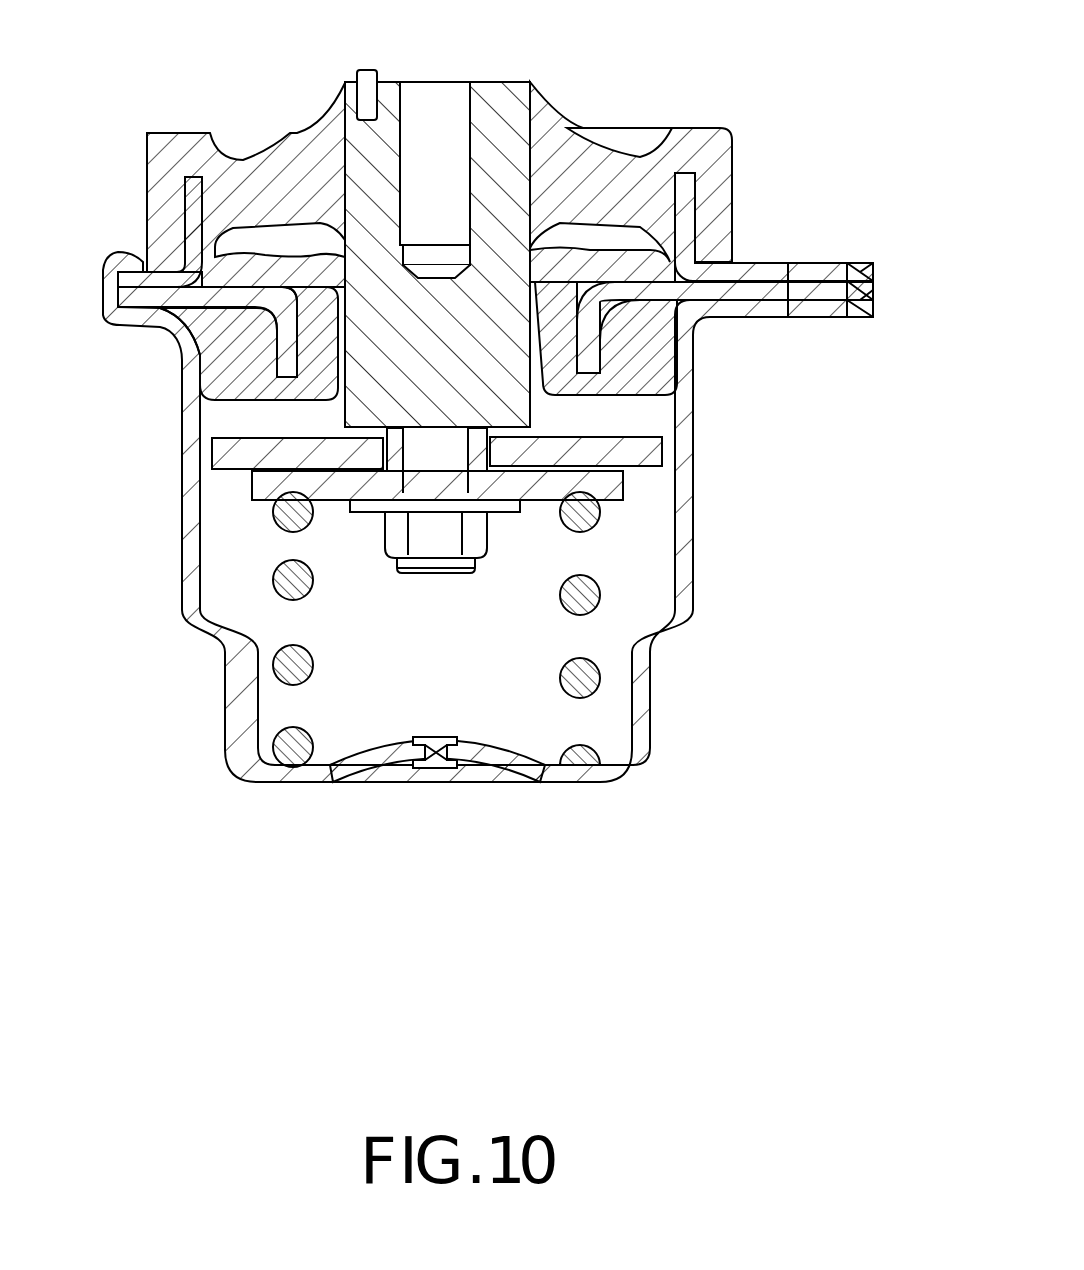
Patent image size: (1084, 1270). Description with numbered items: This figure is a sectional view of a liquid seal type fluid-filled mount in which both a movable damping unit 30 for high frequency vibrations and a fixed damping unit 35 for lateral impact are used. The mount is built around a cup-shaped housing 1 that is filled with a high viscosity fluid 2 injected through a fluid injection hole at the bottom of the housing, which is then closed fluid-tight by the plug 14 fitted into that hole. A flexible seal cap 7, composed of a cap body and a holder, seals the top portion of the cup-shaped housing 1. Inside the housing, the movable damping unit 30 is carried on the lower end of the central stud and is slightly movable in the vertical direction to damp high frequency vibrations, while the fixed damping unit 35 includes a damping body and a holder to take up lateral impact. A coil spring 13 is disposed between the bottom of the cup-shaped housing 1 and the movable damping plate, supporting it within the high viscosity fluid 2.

The cup-shaped housing 1 is at (643, 710).
The high viscosity fluid 2 is at (347, 733).
The flexible seal cap 7 is at (612, 107).
The coil spring 13 is at (293, 665).
The plug 14 is at (430, 758).
The movable damping unit for high frequency vibrations 30 is at (715, 466).
The fixed damping unit for lateral impact 35 is at (711, 372).